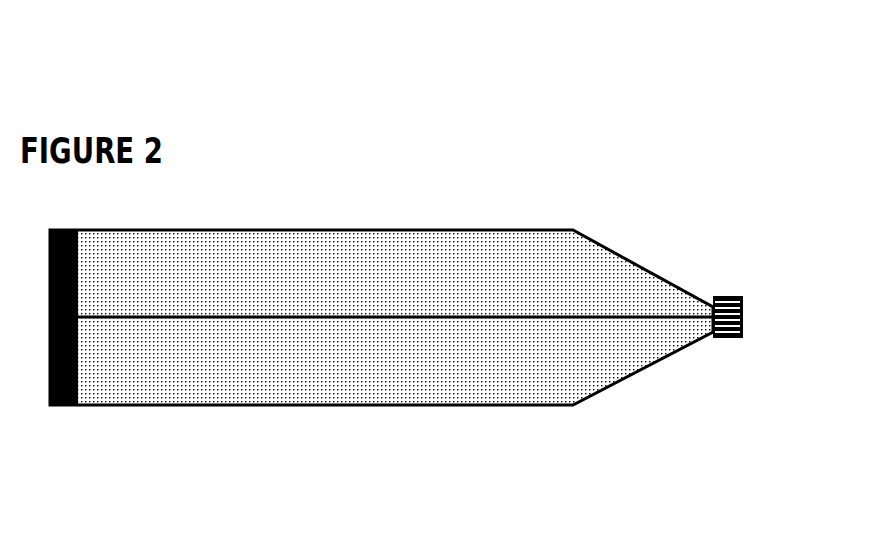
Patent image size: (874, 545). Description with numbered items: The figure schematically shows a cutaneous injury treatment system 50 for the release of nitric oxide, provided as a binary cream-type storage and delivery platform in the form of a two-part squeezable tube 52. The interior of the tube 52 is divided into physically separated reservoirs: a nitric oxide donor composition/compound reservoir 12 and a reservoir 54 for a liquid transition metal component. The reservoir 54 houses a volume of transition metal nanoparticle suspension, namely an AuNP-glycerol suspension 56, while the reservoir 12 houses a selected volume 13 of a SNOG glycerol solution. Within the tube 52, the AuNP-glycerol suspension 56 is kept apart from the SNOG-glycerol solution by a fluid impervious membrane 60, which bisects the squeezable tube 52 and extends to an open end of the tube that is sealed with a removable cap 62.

The cutaneous injury treatment system 50 is at (435, 95).
The two-part squeezable tube 52 is at (527, 228).
The reservoir for liquid transition metal component 54 is at (393, 258).
The AuNP-glycerol suspension 56 is at (163, 258).
The fluid impervious membrane 60 is at (593, 312).
The removable cap 62 is at (723, 341).
The nitric oxide donor composition/compound reservoir 12 is at (135, 372).
The volume of SNOG glycerol solution 13 is at (545, 370).